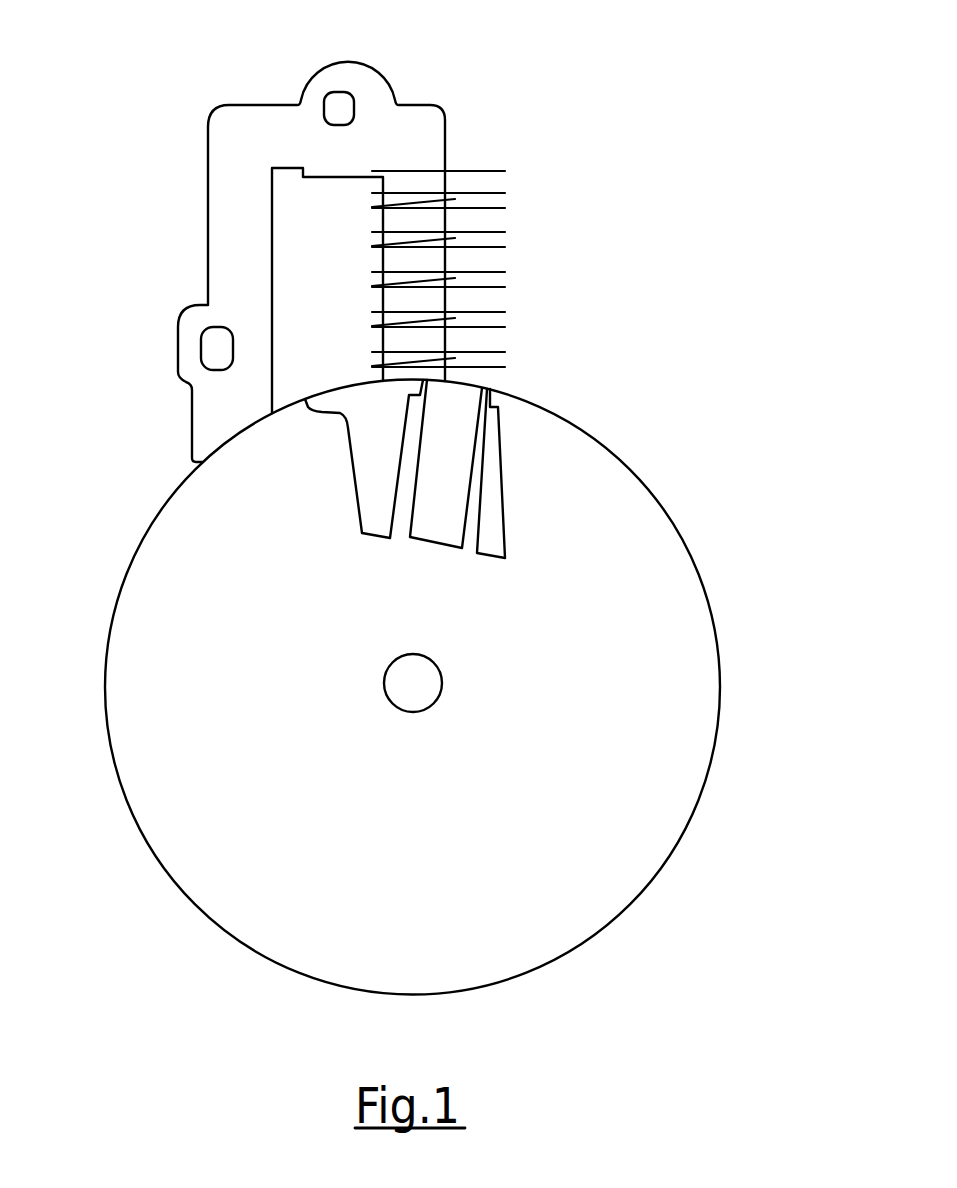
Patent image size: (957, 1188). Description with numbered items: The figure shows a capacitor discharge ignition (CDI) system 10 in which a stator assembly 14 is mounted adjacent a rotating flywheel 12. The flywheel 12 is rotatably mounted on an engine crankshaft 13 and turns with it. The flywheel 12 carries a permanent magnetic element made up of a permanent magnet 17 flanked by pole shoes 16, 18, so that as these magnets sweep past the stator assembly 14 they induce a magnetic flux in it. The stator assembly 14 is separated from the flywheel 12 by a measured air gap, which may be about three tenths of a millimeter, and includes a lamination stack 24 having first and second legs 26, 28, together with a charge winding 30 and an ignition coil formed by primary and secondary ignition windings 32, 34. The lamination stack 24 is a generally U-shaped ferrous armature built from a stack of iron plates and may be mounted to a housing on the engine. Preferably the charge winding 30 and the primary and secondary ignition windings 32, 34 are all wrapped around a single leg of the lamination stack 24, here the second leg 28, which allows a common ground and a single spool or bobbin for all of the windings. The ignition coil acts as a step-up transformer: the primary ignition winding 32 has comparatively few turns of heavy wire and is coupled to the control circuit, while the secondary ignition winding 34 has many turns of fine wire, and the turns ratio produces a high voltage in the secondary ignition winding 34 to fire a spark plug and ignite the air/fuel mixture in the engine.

The CDI system 10 is at (722, 180).
The flywheel 12 is at (700, 675).
The engine crankshaft 13 is at (420, 685).
The stator assembly 14 is at (180, 150).
The pole shoe 16 is at (373, 510).
The permanent magnet 17 is at (433, 532).
The pole shoe 18 is at (502, 517).
The lamination stack 24 is at (467, 170).
The first leg 26 is at (227, 270).
The second leg 28 is at (505, 367).
The charge winding 30 is at (500, 200).
The primary ignition winding 32 is at (500, 243).
The secondary ignition winding 34 is at (502, 280).